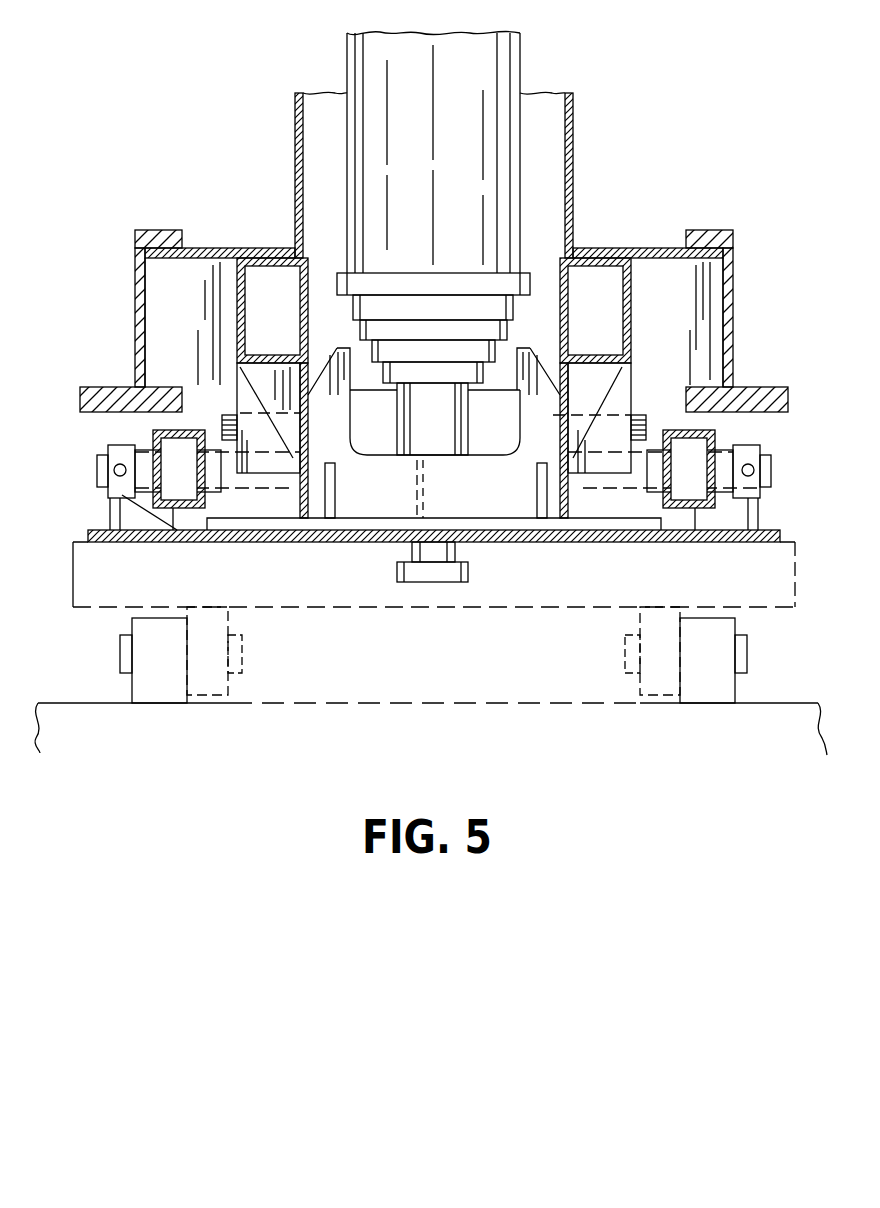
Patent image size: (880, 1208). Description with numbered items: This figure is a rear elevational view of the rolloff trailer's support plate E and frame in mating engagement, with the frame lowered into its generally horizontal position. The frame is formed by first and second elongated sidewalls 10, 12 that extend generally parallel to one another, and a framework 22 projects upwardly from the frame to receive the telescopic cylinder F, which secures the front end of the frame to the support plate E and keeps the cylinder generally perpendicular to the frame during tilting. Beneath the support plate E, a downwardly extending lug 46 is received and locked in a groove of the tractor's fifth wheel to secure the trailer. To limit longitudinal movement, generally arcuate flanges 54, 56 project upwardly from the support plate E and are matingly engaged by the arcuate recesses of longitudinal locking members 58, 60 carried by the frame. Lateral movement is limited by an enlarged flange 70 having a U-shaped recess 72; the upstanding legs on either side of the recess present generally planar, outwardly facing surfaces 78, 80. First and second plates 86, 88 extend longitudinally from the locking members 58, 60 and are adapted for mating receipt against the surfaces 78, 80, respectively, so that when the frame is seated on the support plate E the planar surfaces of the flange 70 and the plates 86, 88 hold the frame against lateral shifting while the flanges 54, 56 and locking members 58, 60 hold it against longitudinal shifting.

The telescopic cylinder F is at (457, 57).
The framework 22 is at (573, 153).
The first elongated sidewall 10 is at (140, 296).
The second elongated sidewall 12 is at (727, 343).
The outwardly facing surface 78 is at (308, 405).
The outwardly facing surface 80 is at (557, 404).
The longitudinal locking member 60 is at (588, 463).
The longitudinal locking member 58 is at (258, 462).
The U-shaped recess 72 is at (371, 452).
The first plate 86 is at (345, 488).
The second plate 88 is at (522, 488).
The enlarged flange 70 is at (385, 502).
The arcuate flange 54 is at (235, 507).
The arcuate flange 56 is at (640, 473).
The lug 46 is at (447, 583).
The support plate E is at (655, 543).